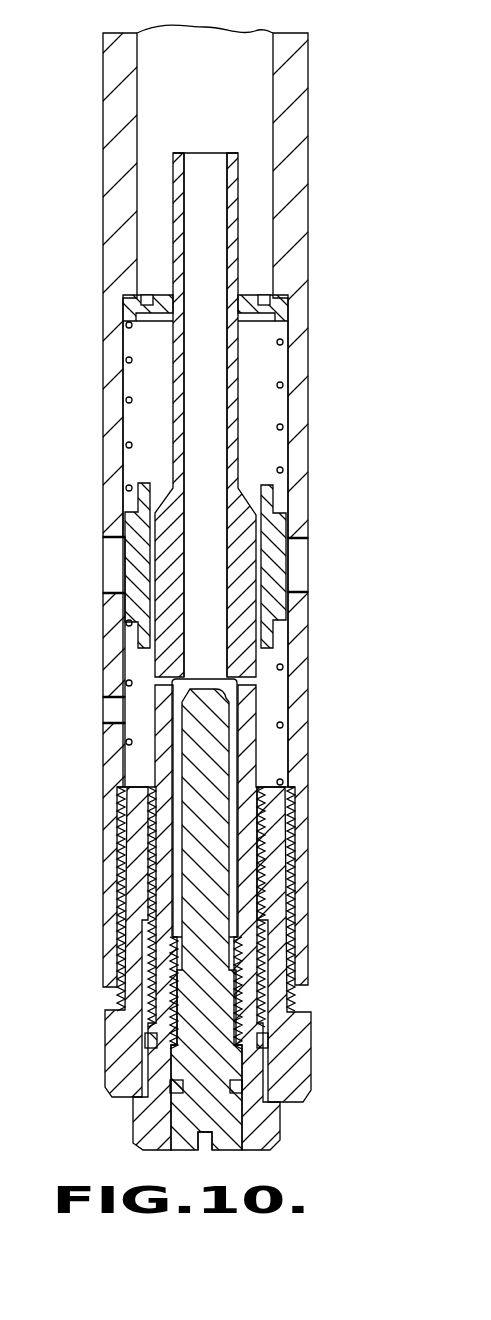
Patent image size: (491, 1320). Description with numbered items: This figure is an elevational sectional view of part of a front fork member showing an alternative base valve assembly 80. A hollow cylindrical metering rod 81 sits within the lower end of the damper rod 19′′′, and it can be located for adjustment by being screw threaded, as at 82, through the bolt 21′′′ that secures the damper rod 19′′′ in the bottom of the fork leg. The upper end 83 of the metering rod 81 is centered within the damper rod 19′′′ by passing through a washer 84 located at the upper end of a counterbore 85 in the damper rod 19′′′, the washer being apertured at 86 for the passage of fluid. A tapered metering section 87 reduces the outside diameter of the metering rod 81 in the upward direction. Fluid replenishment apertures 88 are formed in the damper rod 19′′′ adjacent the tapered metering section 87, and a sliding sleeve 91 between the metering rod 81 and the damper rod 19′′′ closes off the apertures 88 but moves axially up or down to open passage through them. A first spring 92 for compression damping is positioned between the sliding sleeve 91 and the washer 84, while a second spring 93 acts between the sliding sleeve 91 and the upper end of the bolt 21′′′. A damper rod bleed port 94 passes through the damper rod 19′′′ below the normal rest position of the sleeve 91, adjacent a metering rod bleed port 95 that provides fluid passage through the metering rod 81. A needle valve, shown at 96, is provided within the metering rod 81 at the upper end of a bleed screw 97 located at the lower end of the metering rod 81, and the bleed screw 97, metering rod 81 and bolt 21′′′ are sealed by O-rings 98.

The damper rod 19′′′ is at (297, 85).
The base valve assembly 80 is at (332, 498).
The metering rod 81 is at (238, 183).
The screw thread 82 is at (258, 870).
The upper end of metering rod 83 is at (238, 220).
The washer 84 is at (288, 306).
The counterbore 85 is at (280, 361).
The apertures 86 is at (262, 297).
The tapered metering section 87 is at (152, 480).
The fluid replenishment apertures 88 is at (103, 555).
The sliding sleeve 91 is at (308, 563).
The first spring 92 is at (284, 388).
The second spring 93 is at (126, 683).
The damper rod bleed port 94 is at (110, 720).
The metering rod bleed port 95 is at (240, 694).
The piston head 96 is at (208, 690).
The bleed screw 97 is at (228, 1150).
The O-rings 98 is at (172, 1087).
The bolt 21′′′ is at (311, 1032).